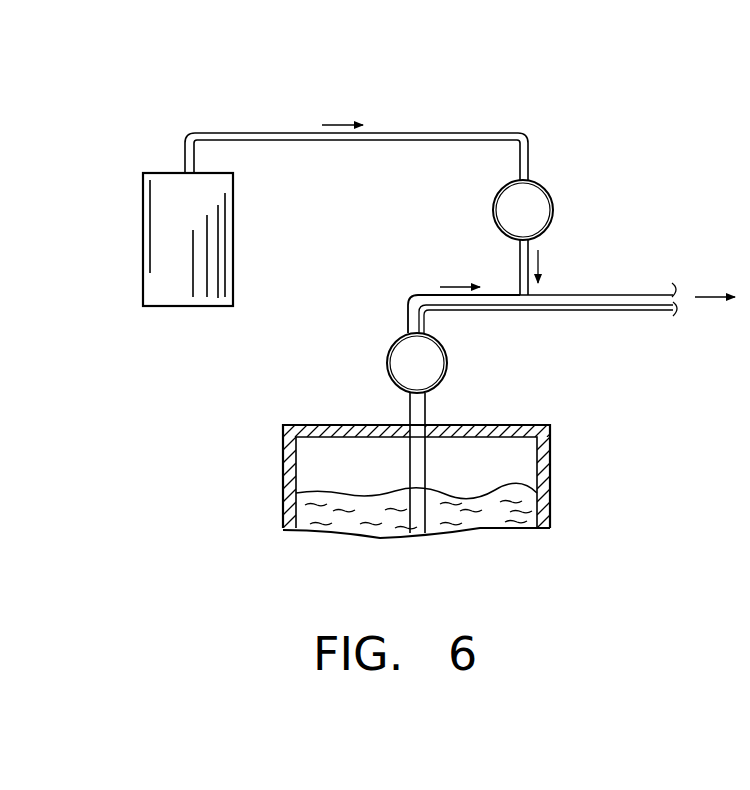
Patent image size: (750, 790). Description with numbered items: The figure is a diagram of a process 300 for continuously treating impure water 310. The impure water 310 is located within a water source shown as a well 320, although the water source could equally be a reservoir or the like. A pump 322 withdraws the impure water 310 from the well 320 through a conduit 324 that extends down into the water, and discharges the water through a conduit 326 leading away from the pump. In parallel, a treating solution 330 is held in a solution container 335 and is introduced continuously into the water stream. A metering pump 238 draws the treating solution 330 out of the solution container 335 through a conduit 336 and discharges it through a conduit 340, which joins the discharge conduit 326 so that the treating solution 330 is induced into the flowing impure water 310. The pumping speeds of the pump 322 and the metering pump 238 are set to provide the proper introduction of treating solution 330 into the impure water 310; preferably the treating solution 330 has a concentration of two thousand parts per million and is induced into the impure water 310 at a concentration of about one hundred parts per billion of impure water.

The process 300 is at (133, 116).
The treating solution 330 is at (152, 190).
The solution container 335 is at (145, 242).
The conduit 336 is at (287, 128).
The metering pump 238 is at (553, 198).
The conduit 340 is at (520, 268).
The pump 322 is at (388, 355).
The conduit 324 is at (427, 410).
The conduit 326 is at (602, 310).
The well 320 is at (548, 470).
The impure water 310 is at (365, 500).